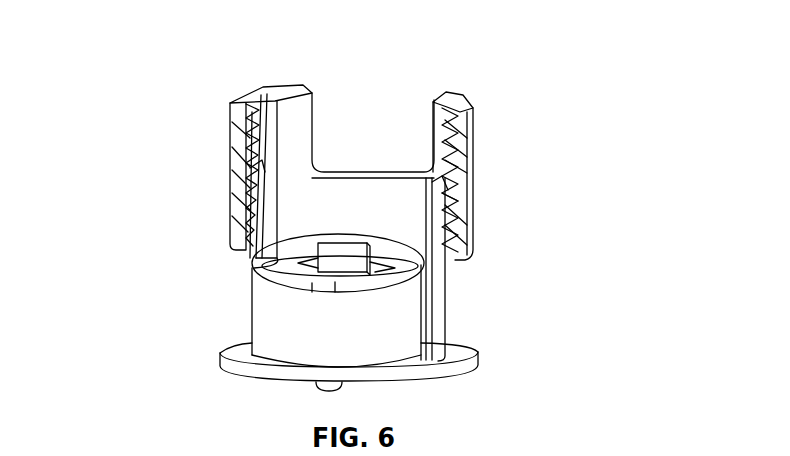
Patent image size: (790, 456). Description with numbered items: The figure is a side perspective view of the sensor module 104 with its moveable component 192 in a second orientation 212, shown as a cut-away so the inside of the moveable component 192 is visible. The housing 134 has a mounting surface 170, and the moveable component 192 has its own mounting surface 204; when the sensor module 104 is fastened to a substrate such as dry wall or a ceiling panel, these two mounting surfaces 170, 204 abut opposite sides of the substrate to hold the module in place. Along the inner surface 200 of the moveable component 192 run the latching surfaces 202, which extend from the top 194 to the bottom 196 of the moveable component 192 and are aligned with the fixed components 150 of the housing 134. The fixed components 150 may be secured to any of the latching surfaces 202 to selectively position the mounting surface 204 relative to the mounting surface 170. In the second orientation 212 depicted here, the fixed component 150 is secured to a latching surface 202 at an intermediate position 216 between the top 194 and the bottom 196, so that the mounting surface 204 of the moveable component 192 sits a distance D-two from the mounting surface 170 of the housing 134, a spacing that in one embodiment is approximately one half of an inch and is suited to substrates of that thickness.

The sensor module 104 is at (139, 217).
The housing 134 is at (293, 341).
The fixed component 150 is at (257, 168).
The mounting surface 170 is at (462, 349).
The moveable component 192 is at (466, 160).
The top 194 is at (464, 81).
The bottom 196 is at (458, 266).
The inner surface 200 is at (284, 106).
The latching surfaces 202 is at (227, 105).
The mounting surface 204 is at (240, 257).
The second orientation 212 is at (378, 64).
The intermediate position 216 is at (443, 195).